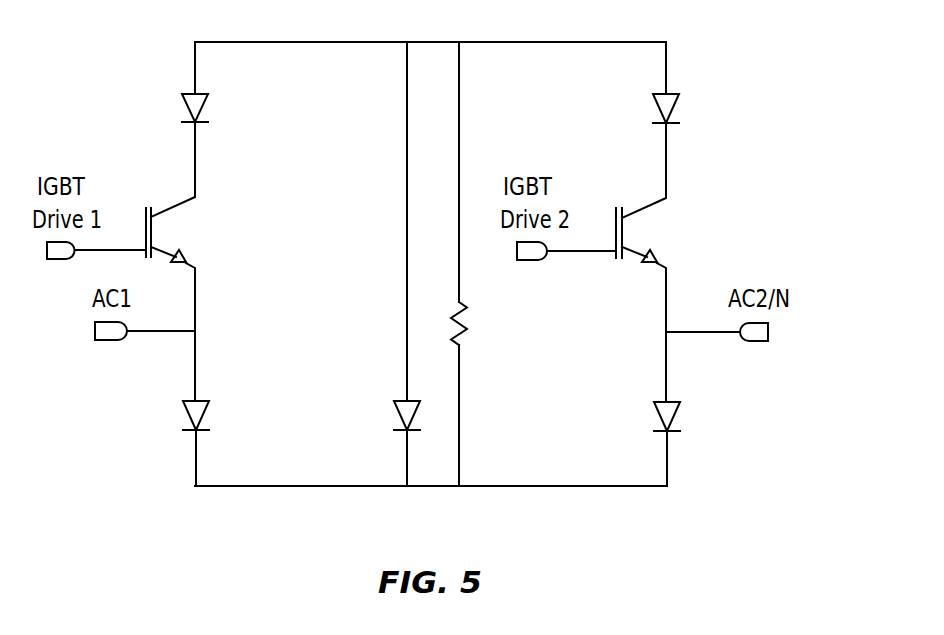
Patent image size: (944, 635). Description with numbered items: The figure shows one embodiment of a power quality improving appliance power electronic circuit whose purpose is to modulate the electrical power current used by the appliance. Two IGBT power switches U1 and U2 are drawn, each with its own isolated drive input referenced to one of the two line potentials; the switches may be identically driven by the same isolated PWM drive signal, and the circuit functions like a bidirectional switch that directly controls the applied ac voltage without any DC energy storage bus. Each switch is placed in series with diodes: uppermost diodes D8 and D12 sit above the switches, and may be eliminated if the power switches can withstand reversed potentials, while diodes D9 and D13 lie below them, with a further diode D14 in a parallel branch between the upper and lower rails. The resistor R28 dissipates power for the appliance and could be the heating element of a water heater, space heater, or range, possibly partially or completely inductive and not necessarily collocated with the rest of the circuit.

The diode 1N4148 D8 is at (250, 90).
The diode 1N4148 D9 is at (252, 397).
The diode 1N4148 D12 is at (726, 91).
The diode 1N4148 D13 is at (728, 397).
The diode 1N4148 D14 is at (347, 435).
The IGBT IXGH32N60CD U1 is at (265, 235).
The IGBT IXGH32N60CD U2 is at (737, 235).
The resistor 9.6 ohm R28 is at (508, 323).